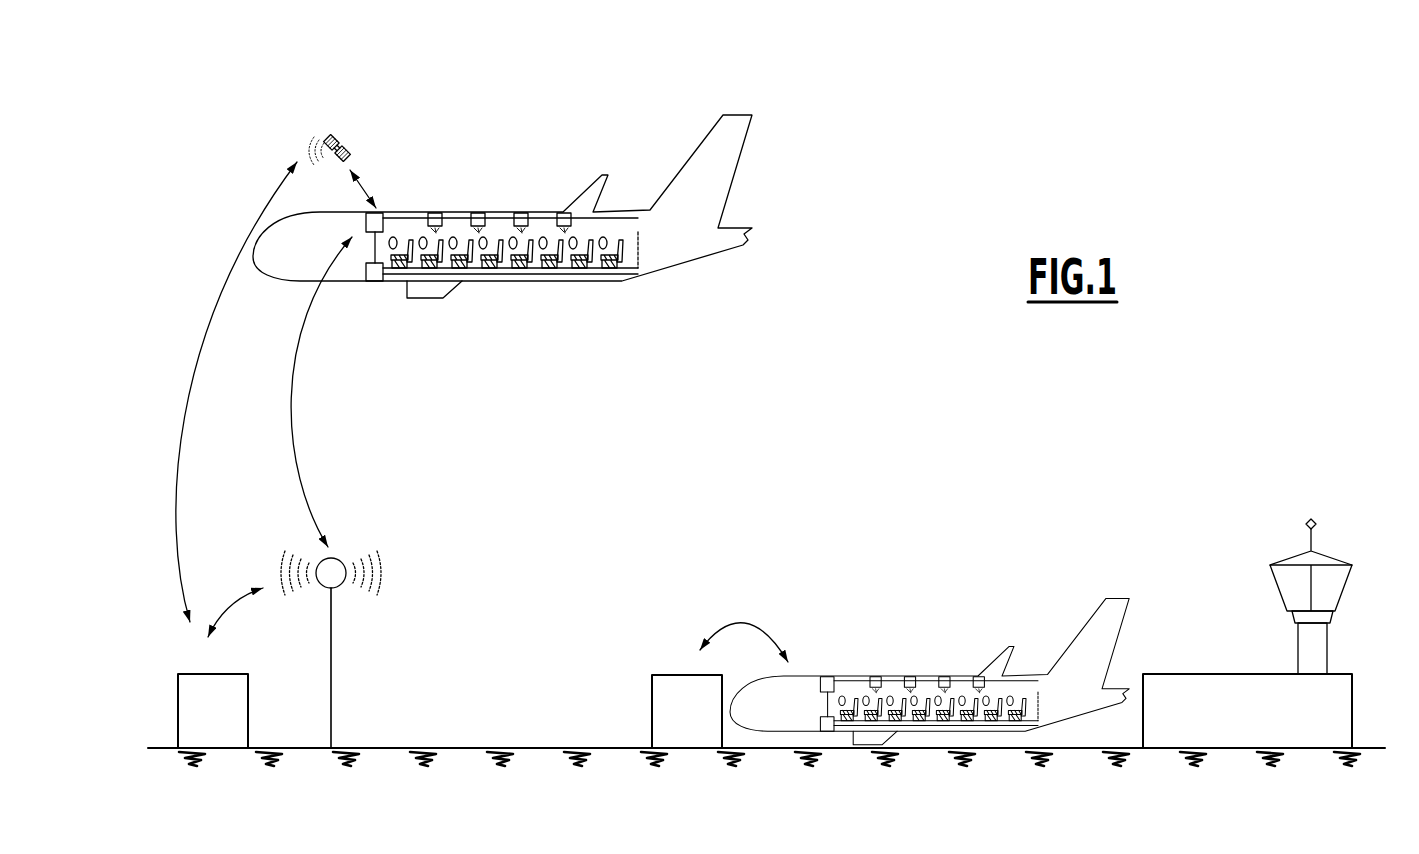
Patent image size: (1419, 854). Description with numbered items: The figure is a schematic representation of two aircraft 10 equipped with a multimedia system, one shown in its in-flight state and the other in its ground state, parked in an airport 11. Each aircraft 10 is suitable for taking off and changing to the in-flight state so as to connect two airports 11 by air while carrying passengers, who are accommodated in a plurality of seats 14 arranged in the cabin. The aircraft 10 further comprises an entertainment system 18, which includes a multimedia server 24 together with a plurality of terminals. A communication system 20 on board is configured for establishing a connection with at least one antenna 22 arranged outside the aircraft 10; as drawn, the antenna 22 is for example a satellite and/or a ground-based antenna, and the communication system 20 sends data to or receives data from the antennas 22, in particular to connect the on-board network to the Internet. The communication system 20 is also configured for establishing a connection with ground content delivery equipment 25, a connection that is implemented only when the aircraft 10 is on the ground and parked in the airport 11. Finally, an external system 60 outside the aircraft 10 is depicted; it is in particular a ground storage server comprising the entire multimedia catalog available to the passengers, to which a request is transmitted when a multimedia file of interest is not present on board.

The aircraft 10 is at (691, 430).
The airport 11 is at (1260, 721).
The seats 14 is at (550, 272).
The entertainment system 18 is at (474, 290).
The communication system 20 is at (380, 213).
The antenna 22 is at (341, 133).
The multimedia server 24 is at (377, 284).
The ground content delivery equipment 25 is at (699, 721).
The external system 60 is at (225, 721).